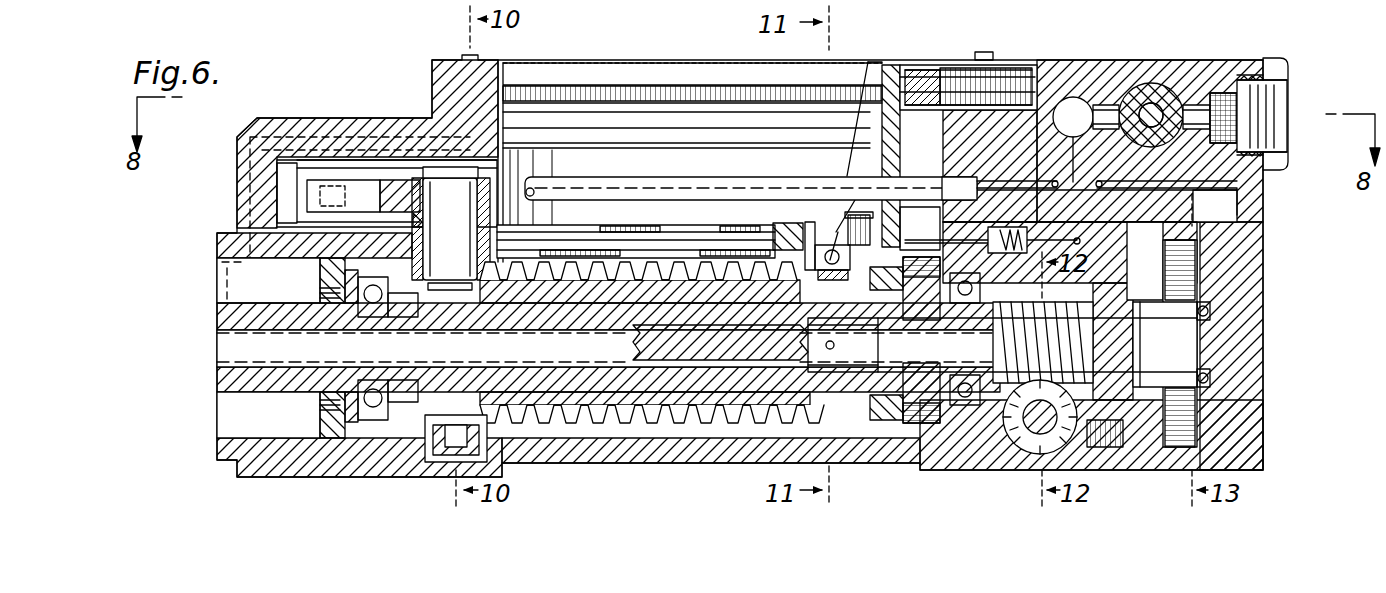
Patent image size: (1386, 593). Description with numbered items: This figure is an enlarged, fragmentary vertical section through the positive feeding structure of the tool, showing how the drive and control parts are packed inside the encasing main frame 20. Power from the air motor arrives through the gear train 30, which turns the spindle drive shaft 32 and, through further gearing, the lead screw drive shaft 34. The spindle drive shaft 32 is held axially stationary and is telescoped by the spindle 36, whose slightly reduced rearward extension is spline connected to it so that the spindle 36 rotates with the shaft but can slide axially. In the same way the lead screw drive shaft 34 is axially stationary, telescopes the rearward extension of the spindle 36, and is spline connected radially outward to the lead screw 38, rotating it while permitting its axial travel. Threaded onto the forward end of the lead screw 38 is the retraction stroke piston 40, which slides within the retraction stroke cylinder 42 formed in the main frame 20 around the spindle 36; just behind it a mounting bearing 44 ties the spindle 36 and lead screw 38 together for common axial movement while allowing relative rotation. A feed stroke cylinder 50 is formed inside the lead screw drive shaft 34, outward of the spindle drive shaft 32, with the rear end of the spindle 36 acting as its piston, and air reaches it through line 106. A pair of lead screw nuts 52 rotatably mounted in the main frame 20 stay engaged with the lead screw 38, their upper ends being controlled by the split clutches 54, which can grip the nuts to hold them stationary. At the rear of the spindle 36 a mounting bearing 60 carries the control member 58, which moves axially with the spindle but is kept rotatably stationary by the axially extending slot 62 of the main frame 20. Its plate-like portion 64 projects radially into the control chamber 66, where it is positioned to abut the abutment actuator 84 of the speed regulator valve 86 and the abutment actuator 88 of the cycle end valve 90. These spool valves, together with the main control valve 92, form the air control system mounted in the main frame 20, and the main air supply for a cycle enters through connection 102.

The main frame 20 is at (233, 206).
The gear train 30 is at (1202, 426).
The spindle drive shaft 32 is at (230, 346).
The lead screw drive shaft 34 is at (628, 440).
The spindle 36 is at (228, 378).
The lead screw 38 is at (730, 440).
The retraction stroke piston 40 is at (322, 278).
The retraction stroke cylinder 42 is at (228, 290).
The mounting bearing 44 is at (322, 418).
The feed stroke cylinder 50 is at (833, 349).
The lead screw nuts 52 is at (443, 167).
The split clutches 54 is at (353, 180).
The control member 58 is at (856, 130).
The mounting bearing 60 is at (818, 245).
The slot 62 is at (658, 236).
The plate-like portion 64 is at (878, 155).
The control chamber 66 is at (655, 75).
The abutment actuator 84 is at (932, 70).
The speed regulator valve 86 is at (988, 58).
The abutment actuator 88 is at (935, 215).
The cycle end valve 90 is at (1100, 230).
The main control valve 92 is at (1150, 85).
The connection 102 is at (1266, 62).
The line 106 is at (858, 410).